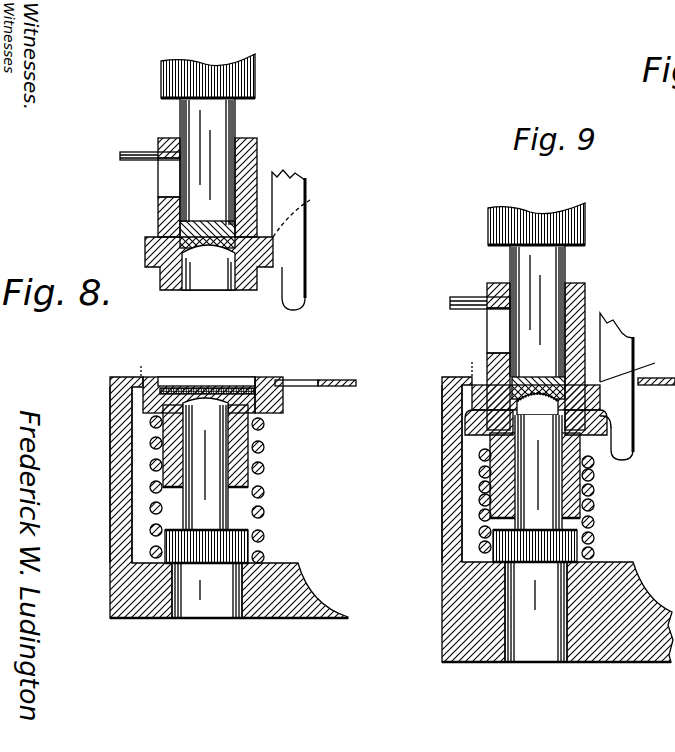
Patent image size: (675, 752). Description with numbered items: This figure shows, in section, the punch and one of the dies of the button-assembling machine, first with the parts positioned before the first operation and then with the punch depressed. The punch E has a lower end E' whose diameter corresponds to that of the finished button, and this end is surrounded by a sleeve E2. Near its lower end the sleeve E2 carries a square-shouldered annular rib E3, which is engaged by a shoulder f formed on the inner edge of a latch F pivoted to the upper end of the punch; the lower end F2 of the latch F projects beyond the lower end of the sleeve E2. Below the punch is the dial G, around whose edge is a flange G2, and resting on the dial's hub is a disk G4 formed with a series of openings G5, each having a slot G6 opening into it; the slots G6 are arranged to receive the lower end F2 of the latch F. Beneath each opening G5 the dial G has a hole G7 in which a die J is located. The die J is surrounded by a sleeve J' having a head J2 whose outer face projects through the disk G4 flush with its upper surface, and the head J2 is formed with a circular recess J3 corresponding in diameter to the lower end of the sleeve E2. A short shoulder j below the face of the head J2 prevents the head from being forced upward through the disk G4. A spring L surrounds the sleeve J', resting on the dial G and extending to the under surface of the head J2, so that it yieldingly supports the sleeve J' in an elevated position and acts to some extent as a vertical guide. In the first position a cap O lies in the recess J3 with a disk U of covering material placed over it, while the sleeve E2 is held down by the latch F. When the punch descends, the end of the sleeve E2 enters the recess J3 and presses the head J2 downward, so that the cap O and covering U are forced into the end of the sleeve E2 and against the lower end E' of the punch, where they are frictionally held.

In FIG. 8, the punch E is at (220, 76).
In FIG. 9, the punch E is at (552, 224).
In FIG. 8, the lower end of punch E' is at (207, 194).
In FIG. 9, the lower end of punch E' is at (537, 330).
In FIG. 8, the sleeve E2 is at (257, 149).
In FIG. 9, the sleeve E2 is at (586, 292).
In FIG. 8, the square-shouldered annular rib E3 is at (146, 253).
In FIG. 9, the square-shouldered annular rib E3 is at (470, 403).
In FIG. 8, the latch F is at (306, 226).
In FIG. 9, the latch F is at (623, 349).
In FIG. 8, the shoulder f is at (300, 212).
In FIG. 9, the shoulder f is at (631, 368).
In FIG. 8, the lower end of latch F2 is at (290, 300).
In FIG. 9, the lower end of latch F2 is at (628, 453).
In FIG. 9, the short shoulder j is at (613, 419).
In FIG. 8, the dial G is at (288, 563).
In FIG. 9, the dial G is at (613, 563).
In FIG. 8, the flange G2 is at (110, 447).
In FIG. 9, the flange G2 is at (442, 488).
In FIG. 8, the disk G4 is at (336, 378).
In FIG. 8, the openings G5 is at (140, 362).
In FIG. 9, the openings G5 is at (469, 360).
In FIG. 8, the slot G6 is at (307, 378).
In FIG. 8, the hole G7 is at (165, 660).
In FIG. 9, the hole G7 is at (472, 665).
In FIG. 8, the die J is at (231, 472).
In FIG. 9, the die J is at (535, 488).
In FIG. 8, the sleeve J' is at (223, 446).
In FIG. 9, the sleeve J' is at (535, 475).
In FIG. 8, the head J2 is at (260, 377).
In FIG. 8, the circular recess J3 is at (163, 378).
In FIG. 9, the circular recess J3 is at (536, 422).
In FIG. 8, the spring L is at (265, 467).
In FIG. 9, the spring L is at (596, 492).
In FIG. 8, the cap O is at (200, 392).
In FIG. 8, the disk U is at (216, 388).